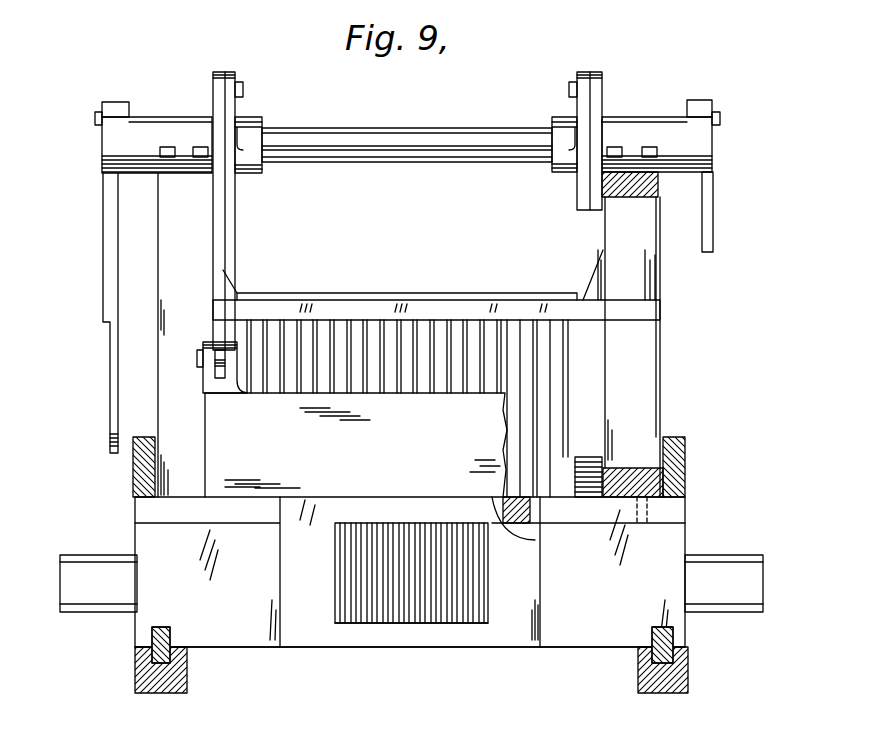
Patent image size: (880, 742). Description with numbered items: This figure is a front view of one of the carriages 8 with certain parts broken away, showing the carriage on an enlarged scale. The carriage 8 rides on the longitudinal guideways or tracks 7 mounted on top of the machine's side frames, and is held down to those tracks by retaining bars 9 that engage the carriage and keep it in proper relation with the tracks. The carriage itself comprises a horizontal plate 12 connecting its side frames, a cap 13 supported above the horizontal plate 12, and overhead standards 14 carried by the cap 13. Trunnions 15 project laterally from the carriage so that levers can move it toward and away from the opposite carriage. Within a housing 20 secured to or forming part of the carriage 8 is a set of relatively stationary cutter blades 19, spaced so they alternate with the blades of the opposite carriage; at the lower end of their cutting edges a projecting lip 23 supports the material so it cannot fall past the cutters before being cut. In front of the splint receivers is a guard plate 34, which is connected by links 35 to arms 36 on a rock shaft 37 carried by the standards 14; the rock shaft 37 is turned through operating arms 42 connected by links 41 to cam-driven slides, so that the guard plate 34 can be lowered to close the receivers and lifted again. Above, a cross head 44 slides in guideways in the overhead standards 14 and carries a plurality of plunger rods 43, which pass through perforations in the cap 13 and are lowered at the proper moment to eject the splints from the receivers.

The longitudinal guideways or tracks 7 is at (150, 638).
The carriage 8 is at (709, 381).
The retaining bars 9 is at (140, 481).
The horizontal plate 12 is at (410, 662).
The cap 13 is at (426, 571).
The overhead standards 14 is at (409, 335).
The trunnions 15 is at (411, 583).
The cutter blades 19 is at (450, 573).
The housing 20 is at (419, 568).
The projecting lip 23 is at (413, 618).
The guard plate 34 is at (370, 466).
The links 35 is at (222, 222).
The arms 36 is at (232, 112).
The rock shaft 37 is at (428, 133).
The links 41 is at (108, 254).
The operating arms 42 is at (138, 138).
The plunger rods 43 is at (540, 368).
The cross head 44 is at (397, 307).